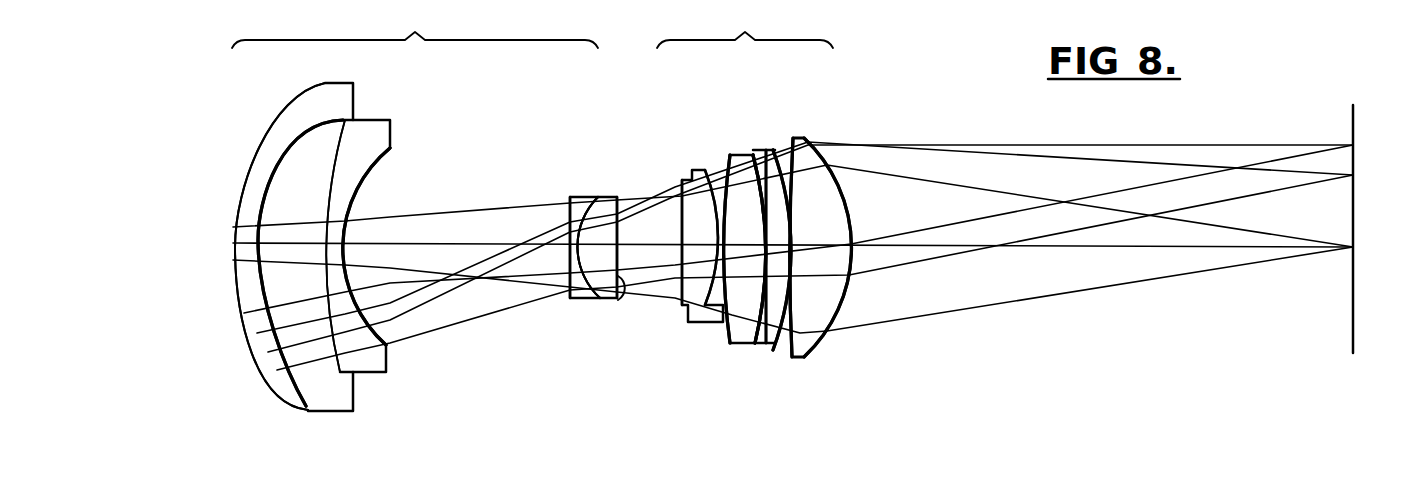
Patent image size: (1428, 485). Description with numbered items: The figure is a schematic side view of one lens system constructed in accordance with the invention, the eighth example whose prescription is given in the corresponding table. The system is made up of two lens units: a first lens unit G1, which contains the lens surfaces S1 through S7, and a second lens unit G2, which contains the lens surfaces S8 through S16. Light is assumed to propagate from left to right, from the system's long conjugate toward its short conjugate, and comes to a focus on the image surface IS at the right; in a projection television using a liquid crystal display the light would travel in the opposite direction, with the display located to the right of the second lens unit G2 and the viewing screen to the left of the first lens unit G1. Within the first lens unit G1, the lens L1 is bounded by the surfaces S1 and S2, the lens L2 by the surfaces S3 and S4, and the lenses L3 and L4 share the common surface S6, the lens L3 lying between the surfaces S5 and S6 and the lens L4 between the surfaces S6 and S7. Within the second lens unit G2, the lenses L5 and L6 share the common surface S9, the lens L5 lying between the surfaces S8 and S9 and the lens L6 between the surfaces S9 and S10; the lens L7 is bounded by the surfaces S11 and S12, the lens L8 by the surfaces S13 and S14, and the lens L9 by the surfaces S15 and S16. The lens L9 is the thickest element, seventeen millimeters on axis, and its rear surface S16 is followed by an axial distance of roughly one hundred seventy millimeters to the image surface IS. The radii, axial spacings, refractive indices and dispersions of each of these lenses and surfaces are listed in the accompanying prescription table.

The first lens unit G1 is at (415, 29).
The second lens unit G2 is at (745, 29).
The lens L1 is at (282, 116).
The lens L2 is at (392, 118).
The lens L3 is at (573, 196).
The lens L4 is at (607, 196).
The lens L5 is at (703, 169).
The lens L6 is at (733, 156).
The lens L7 is at (745, 150).
The lens L8 is at (770, 150).
The lens L9 is at (815, 142).
The lens surface S1 is at (244, 313).
The lens surface S2 is at (287, 352).
The lens surface S3 is at (335, 362).
The lens surface S4 is at (388, 345).
The lens surface S5 is at (571, 294).
The lens surface S6 is at (576, 296).
The lens surface S7 is at (600, 298).
The lens surface S8 is at (627, 298).
The lens surface S9 is at (686, 316).
The lens surface S10 is at (716, 318).
The lens surface S11 is at (730, 343).
The lens surface S12 is at (752, 344).
The lens surface S13 is at (770, 345).
The lens surface S14 is at (790, 333).
The lens surface S15 is at (834, 316).
The lens surface S16 is at (845, 300).
The image surface IS is at (1353, 323).